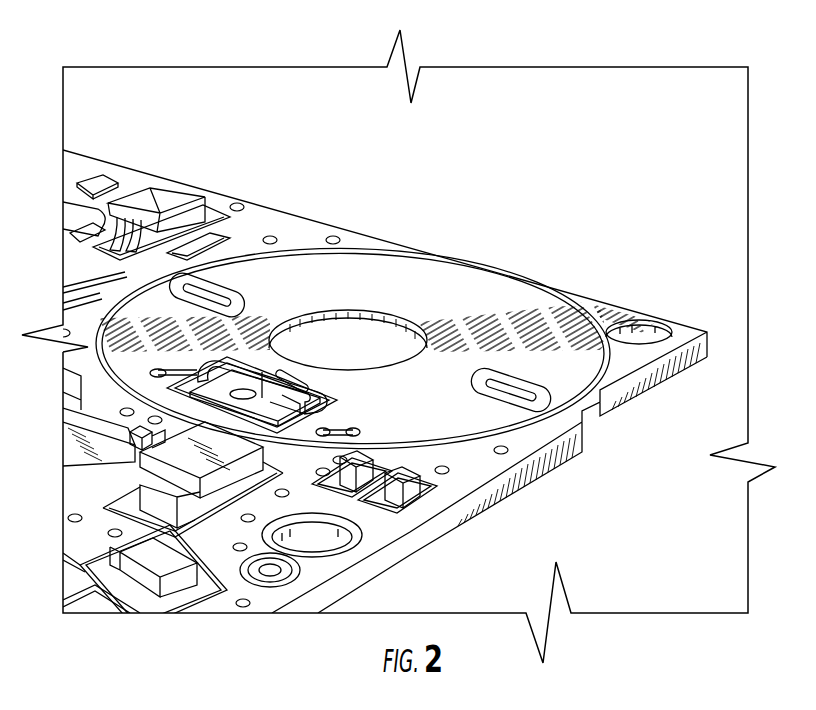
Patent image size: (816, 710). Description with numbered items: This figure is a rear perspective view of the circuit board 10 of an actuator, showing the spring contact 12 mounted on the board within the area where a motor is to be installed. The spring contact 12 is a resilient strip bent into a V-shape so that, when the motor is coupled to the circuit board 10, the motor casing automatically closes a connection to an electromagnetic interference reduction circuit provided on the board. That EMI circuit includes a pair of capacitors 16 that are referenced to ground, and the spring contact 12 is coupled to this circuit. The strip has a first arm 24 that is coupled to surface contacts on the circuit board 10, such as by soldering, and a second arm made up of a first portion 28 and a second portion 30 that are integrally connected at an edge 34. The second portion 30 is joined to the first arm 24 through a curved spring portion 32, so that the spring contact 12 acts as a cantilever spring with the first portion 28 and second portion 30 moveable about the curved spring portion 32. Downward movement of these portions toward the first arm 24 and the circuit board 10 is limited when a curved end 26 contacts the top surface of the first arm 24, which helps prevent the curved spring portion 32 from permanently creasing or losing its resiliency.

The circuit board 10 is at (381, 390).
The spring contact 12 is at (350, 395).
The capacitors 16 is at (396, 494).
The first arm 24 is at (150, 398).
The curved end 26 is at (204, 386).
The first portion 28 is at (237, 348).
The second portion 30 is at (301, 353).
The curved spring portion 32 is at (248, 412).
The edge 34 is at (262, 347).